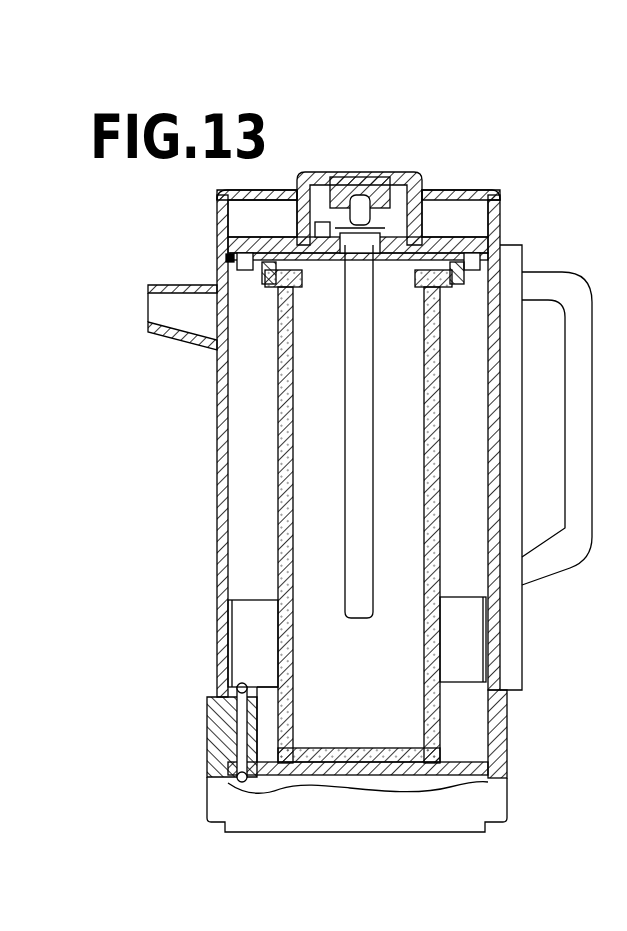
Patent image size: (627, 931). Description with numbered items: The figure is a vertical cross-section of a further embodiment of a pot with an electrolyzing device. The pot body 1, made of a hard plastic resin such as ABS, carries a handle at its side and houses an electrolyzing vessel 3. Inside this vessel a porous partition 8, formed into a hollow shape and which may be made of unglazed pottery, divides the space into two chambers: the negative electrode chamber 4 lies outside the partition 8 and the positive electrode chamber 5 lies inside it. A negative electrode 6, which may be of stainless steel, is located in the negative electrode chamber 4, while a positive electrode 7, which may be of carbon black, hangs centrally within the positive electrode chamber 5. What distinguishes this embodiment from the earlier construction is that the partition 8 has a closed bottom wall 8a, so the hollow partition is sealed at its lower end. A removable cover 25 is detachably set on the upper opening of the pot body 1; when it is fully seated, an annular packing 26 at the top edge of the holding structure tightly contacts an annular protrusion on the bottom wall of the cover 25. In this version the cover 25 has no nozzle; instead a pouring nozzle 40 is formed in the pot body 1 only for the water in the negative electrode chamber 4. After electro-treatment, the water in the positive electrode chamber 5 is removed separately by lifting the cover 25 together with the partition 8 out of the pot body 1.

The pot body 1 is at (217, 548).
The electrolyzing vessel 3 is at (530, 467).
The negative electrode chamber 4 is at (467, 485).
The positive electrode chamber 5 is at (327, 468).
The negative electrode 6 is at (230, 650).
The positive electrode 7 is at (370, 568).
The porous partition 8 is at (278, 435).
The closed bottom wall 8a is at (320, 754).
The cover 25 is at (452, 182).
The annular packing 26 is at (225, 258).
The pouring nozzle 40 is at (175, 332).